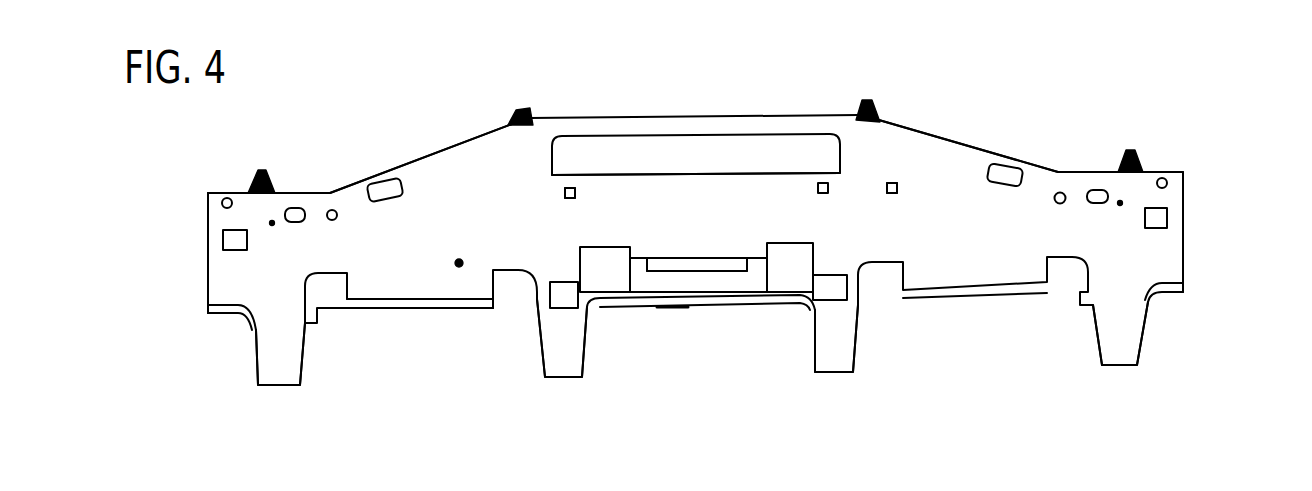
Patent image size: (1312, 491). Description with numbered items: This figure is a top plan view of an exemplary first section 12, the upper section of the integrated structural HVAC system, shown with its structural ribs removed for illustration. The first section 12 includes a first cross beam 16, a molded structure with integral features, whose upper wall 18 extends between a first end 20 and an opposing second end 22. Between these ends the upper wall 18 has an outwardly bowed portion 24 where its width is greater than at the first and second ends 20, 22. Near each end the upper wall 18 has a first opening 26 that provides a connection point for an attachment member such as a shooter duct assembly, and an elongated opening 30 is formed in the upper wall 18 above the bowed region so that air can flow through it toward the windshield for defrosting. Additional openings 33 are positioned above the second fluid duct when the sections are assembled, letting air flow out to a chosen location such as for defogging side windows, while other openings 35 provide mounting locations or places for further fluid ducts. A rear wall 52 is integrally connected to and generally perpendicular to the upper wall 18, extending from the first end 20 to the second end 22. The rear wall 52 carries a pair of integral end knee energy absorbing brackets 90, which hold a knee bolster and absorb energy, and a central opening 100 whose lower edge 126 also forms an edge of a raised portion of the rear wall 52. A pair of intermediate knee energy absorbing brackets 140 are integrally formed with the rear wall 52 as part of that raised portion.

The first section 12 is at (512, 82).
The first cross beam 16 is at (427, 153).
The upper wall 18 is at (459, 267).
The first end 20 is at (208, 276).
The second end 22 is at (1183, 255).
The outwardly bowed portion 24 is at (955, 142).
The first opening 26 is at (294, 207).
The elongated opening 30 is at (777, 152).
The opening 33 is at (384, 187).
The opening 35 is at (232, 240).
The rear wall 52 is at (421, 309).
The end knee energy absorbing bracket 90 is at (283, 388).
The central opening 100 is at (682, 262).
The lower edge 126 is at (703, 177).
The intermediate knee energy absorbing bracket 140 is at (567, 378).